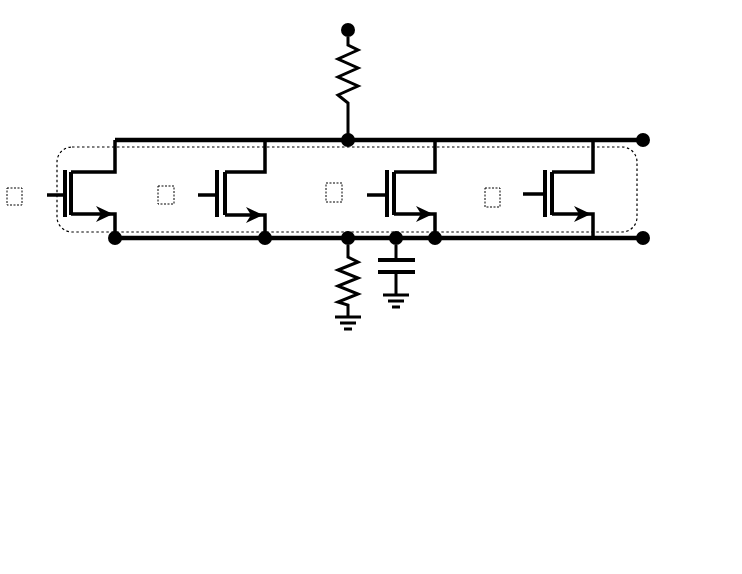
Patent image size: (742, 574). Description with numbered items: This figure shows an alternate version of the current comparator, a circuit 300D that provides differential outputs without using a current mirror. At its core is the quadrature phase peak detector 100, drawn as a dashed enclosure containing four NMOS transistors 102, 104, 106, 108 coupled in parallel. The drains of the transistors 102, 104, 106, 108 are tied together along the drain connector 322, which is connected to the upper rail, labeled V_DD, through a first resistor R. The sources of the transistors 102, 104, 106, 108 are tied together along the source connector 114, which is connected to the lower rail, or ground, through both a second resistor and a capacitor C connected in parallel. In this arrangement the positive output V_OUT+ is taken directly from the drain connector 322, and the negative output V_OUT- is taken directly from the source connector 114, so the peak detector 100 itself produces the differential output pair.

The oscillator circuit 300D is at (552, 87).
The quadrature phase peak detector 100 is at (637, 208).
The NMOS transistor 102 is at (81, 189).
The NMOS transistor 104 is at (233, 189).
The NMOS transistor 106 is at (401, 189).
The NMOS transistor 108 is at (565, 189).
The drain connector 322 is at (190, 139).
The source connector 114 is at (185, 240).